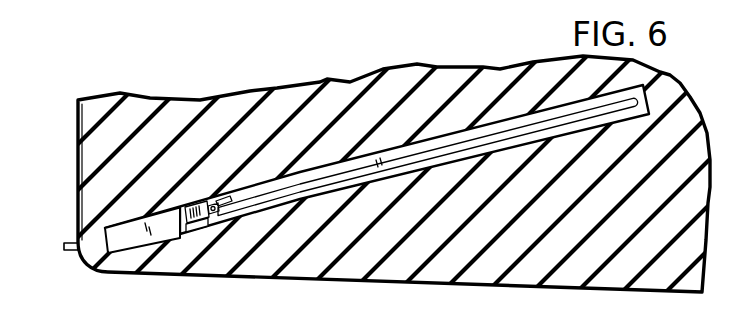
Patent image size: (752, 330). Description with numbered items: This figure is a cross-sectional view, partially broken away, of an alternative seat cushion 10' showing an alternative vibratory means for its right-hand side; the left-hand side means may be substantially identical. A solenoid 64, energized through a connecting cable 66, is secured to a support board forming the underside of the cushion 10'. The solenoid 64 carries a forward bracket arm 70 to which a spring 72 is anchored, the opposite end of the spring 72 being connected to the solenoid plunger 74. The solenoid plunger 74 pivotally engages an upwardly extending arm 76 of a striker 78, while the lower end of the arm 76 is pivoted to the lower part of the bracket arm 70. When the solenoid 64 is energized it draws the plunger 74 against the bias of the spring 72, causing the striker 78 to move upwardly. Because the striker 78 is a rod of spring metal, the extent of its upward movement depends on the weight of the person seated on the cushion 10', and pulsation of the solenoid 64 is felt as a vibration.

The seat cushion 10' is at (376, 185).
The solenoid 64 is at (127, 240).
The connecting cable 66 is at (66, 252).
The forward bracket arm 70 is at (225, 196).
The spring 72 is at (224, 206).
The solenoid plunger 74 is at (195, 233).
The upwardly extending arm 76 is at (187, 226).
The striker 78 is at (381, 173).